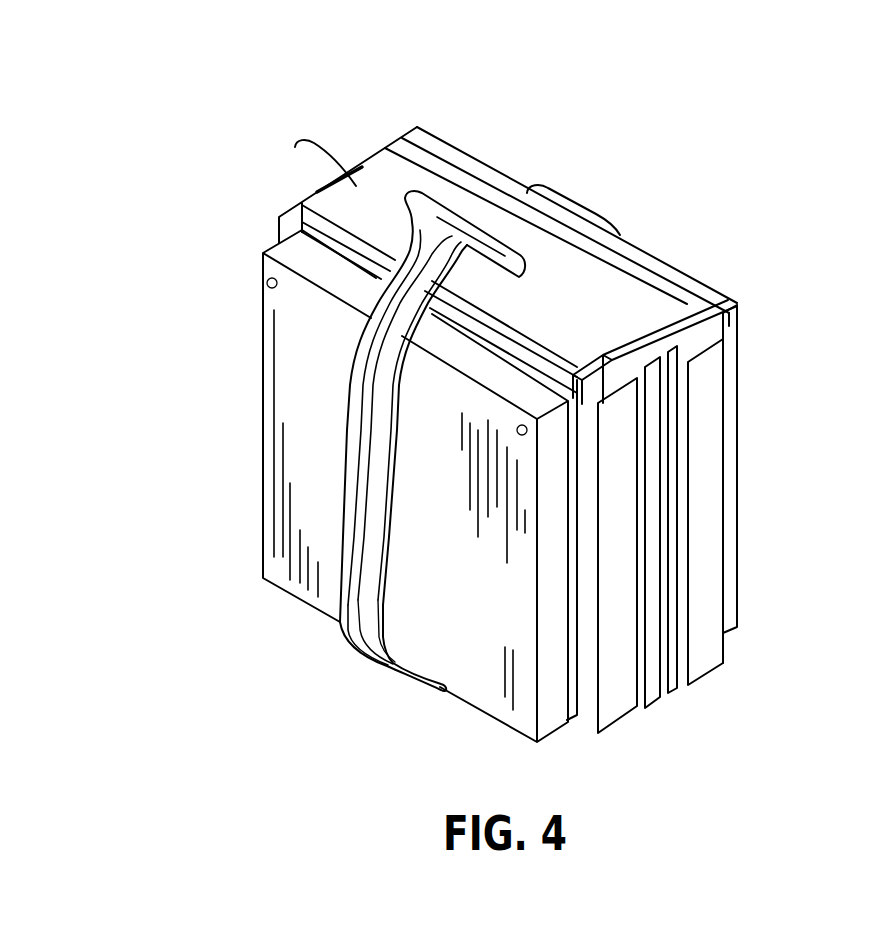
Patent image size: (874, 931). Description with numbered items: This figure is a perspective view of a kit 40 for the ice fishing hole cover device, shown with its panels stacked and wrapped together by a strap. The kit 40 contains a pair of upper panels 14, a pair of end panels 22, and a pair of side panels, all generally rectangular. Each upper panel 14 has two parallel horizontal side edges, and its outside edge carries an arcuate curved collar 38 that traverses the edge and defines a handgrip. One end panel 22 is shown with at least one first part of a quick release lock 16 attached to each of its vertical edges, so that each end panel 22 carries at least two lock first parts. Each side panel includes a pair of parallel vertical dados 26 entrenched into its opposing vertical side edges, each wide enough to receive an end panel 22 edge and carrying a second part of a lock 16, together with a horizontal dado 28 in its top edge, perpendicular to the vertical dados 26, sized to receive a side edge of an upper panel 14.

The upper panel 14 is at (320, 183).
The quick release lock 16 is at (267, 284).
The end panel 22 is at (285, 423).
The vertical dado 26 is at (618, 368).
The horizontal dado 28 is at (612, 375).
The arcuate curved collar 38 is at (404, 197).
The kit 40 is at (197, 128).